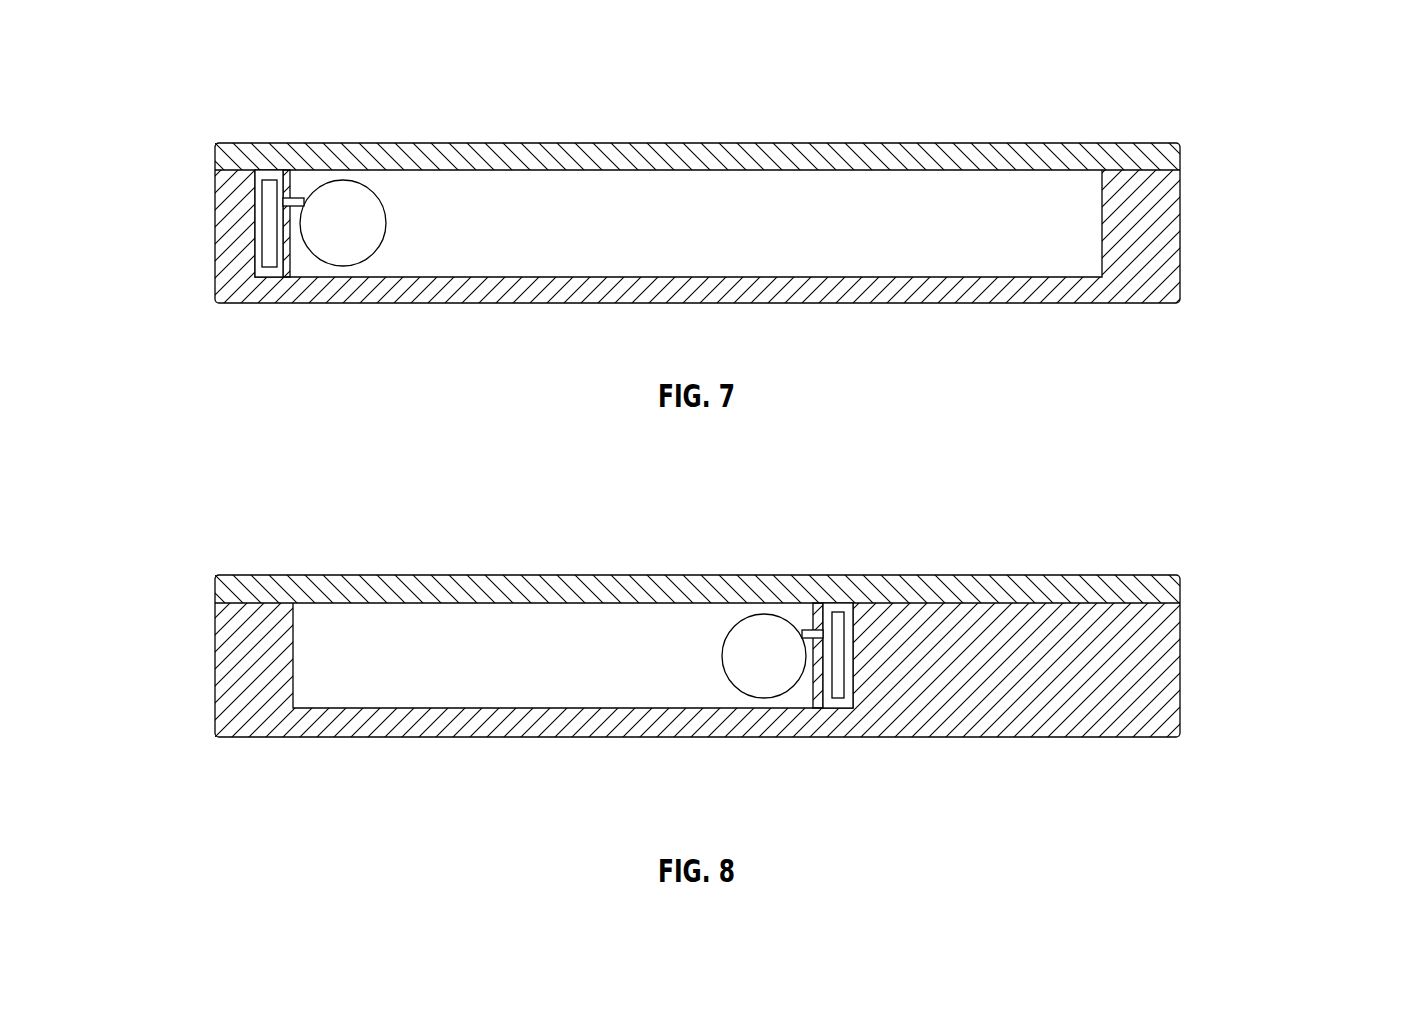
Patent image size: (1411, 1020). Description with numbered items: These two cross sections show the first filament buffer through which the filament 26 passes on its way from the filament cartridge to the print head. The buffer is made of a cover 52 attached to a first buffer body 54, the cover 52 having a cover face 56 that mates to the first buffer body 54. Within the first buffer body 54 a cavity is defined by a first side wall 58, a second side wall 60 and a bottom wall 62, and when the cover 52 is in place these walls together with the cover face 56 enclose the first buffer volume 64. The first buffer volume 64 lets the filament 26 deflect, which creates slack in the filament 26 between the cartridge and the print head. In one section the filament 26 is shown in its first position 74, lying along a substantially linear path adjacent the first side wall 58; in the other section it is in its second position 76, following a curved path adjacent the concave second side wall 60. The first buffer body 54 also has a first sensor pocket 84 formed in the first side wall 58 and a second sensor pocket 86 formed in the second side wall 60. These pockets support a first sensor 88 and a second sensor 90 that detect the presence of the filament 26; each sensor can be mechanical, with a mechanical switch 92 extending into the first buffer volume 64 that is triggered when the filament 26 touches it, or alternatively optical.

In FIG. 7, the filament 26 is at (378, 258).
In FIG. 8, the filament 26 is at (740, 702).
In FIG. 7, the cover 52 is at (1130, 143).
In FIG. 8, the cover 52 is at (1090, 575).
In FIG. 7, the first buffer body 54 is at (1180, 240).
In FIG. 8, the first buffer body 54 is at (1180, 678).
In FIG. 7, the cover face 56 is at (792, 168).
In FIG. 8, the cover face 56 is at (703, 602).
In FIG. 7, the first side wall 58 is at (292, 262).
In FIG. 8, the first side wall 58 is at (293, 693).
In FIG. 7, the second side wall 60 is at (1100, 203).
In FIG. 8, the second side wall 60 is at (812, 707).
In FIG. 7, the bottom wall 62 is at (638, 274).
In FIG. 8, the bottom wall 62 is at (465, 706).
In FIG. 7, the first buffer volume 64 is at (520, 222).
In FIG. 8, the first buffer volume 64 is at (388, 632).
In FIG. 7, the first position 74 is at (345, 205).
In FIG. 8, the second position 76 is at (735, 664).
In FIG. 7, the first sensor pocket 84 is at (256, 203).
In FIG. 8, the second sensor pocket 86 is at (853, 683).
In FIG. 7, the first sensor 88 is at (268, 254).
In FIG. 8, the second sensor 90 is at (835, 657).
In FIG. 7, the mechanical switch 92 is at (298, 200).
In FIG. 8, the mechanical switch 92 is at (808, 630).